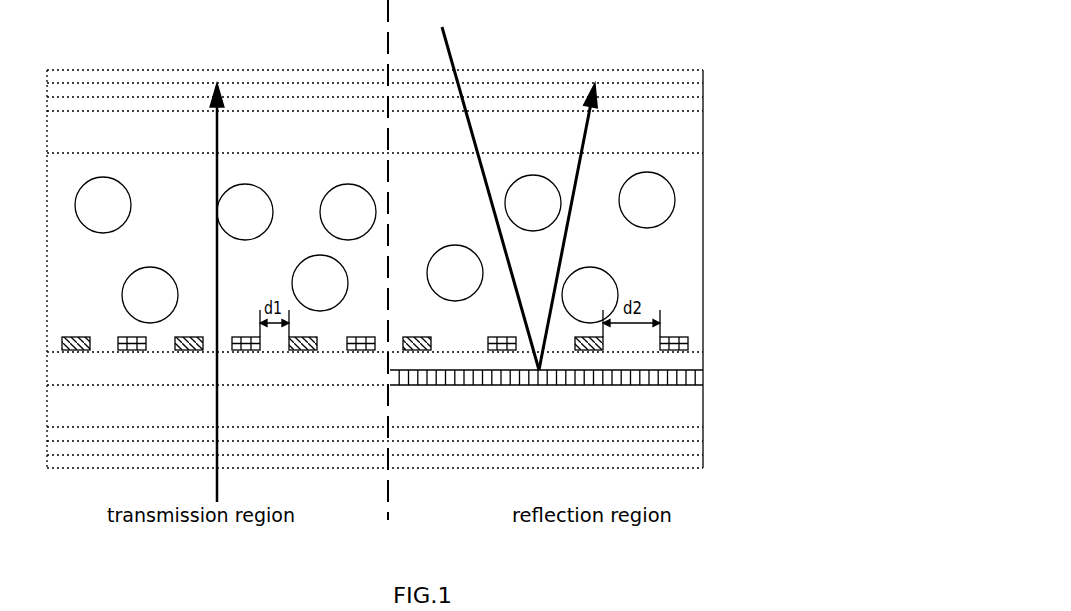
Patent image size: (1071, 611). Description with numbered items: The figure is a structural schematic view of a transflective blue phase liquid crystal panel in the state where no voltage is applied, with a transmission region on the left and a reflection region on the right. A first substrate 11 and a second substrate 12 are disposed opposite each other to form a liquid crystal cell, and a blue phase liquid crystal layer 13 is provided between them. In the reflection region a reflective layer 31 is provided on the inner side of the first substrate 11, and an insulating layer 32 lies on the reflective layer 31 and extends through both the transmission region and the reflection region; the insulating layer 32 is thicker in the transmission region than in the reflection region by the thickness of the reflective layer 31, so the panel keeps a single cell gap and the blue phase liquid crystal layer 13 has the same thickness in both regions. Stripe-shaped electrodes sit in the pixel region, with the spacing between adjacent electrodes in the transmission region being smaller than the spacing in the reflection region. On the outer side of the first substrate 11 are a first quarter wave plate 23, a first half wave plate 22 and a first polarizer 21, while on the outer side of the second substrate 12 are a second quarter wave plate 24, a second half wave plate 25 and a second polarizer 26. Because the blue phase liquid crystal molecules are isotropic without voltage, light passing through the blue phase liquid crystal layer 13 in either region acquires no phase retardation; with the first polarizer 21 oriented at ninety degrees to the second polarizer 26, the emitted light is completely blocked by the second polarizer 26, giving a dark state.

The first substrate 11 is at (325, 415).
The second substrate 12 is at (303, 127).
The blue phase liquid crystal layer 13 is at (675, 243).
The first polarizer 21 is at (690, 463).
The first half wave plate 22 is at (687, 448).
The first quarter wave plate 23 is at (683, 433).
The second quarter wave plate 24 is at (690, 107).
The second half wave plate 25 is at (687, 91).
The second polarizer 26 is at (683, 74).
The reflective layer 31 is at (703, 378).
The insulating layer 32 is at (680, 362).